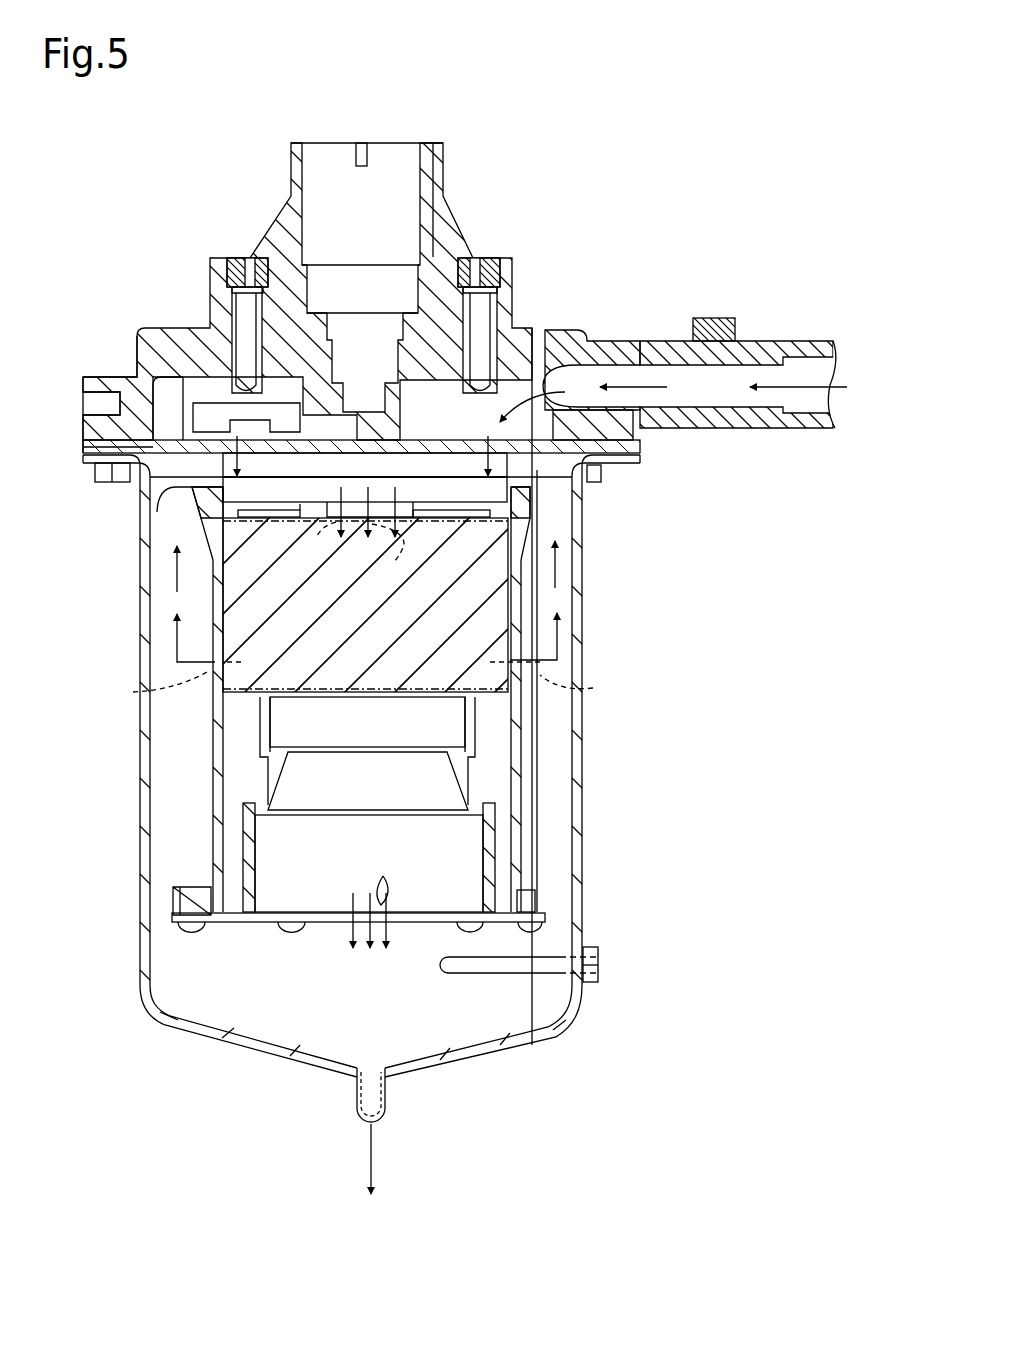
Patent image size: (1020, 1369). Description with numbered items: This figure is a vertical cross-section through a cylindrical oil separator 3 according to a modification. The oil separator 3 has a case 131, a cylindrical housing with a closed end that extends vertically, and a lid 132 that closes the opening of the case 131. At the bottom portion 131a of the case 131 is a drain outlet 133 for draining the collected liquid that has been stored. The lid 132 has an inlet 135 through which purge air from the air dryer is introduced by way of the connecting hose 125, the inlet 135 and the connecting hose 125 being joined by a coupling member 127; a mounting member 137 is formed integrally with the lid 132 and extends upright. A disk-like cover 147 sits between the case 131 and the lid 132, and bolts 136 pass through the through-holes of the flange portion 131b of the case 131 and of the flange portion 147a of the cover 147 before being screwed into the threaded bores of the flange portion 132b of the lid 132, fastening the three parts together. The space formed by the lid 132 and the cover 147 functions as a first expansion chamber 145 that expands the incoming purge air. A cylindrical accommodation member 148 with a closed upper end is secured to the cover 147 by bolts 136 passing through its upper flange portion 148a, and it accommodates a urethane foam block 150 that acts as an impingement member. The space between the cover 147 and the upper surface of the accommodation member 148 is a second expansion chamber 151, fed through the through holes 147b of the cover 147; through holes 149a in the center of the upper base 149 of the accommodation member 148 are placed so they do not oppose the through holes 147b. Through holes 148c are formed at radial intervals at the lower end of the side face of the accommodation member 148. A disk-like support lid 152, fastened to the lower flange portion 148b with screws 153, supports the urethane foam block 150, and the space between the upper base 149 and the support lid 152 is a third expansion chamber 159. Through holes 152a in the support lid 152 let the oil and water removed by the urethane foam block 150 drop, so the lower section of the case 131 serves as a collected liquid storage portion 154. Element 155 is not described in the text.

The oil separator 3 is at (632, 141).
The connecting hose 125 is at (797, 429).
The coupling member 127 is at (664, 352).
The case 131 is at (584, 880).
The bottom portion 131a is at (513, 1057).
The flange portion 131b is at (83, 458).
The lid 132 is at (220, 318).
The flange portion 132b is at (83, 428).
The drain outlet 133 is at (387, 1108).
The inlet 135 is at (614, 364).
The bolts 136 is at (112, 484).
The mounting member 137 is at (457, 243).
The first expansion chamber 145 is at (450, 434).
The cover 147 is at (300, 434).
The flange portion 147a is at (83, 448).
The through holes 147b is at (244, 457).
The accommodation member 148 is at (214, 600).
The flange portion 148a is at (143, 520).
The flange portion 148b is at (172, 898).
The through holes 148c is at (361, 684).
The upper base 149 is at (268, 497).
The through holes 149a is at (275, 560).
The urethane foam block 150 is at (503, 603).
The second expansion chamber 151 is at (368, 478).
The support lid 152 is at (232, 922).
The through holes 152a is at (330, 945).
The screws 153 is at (188, 933).
The collected liquid storage portion 154 is at (397, 1023).
The drain pipe 155 is at (448, 975).
The third expansion chamber 159 is at (387, 634).